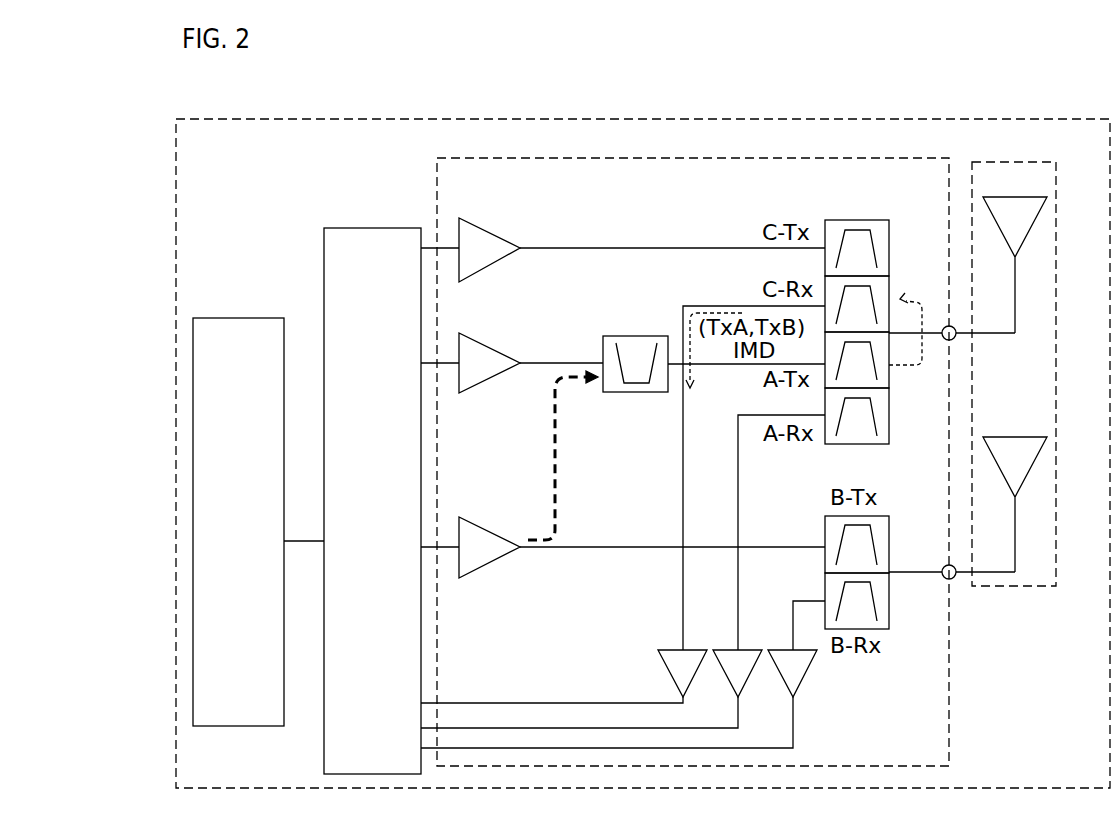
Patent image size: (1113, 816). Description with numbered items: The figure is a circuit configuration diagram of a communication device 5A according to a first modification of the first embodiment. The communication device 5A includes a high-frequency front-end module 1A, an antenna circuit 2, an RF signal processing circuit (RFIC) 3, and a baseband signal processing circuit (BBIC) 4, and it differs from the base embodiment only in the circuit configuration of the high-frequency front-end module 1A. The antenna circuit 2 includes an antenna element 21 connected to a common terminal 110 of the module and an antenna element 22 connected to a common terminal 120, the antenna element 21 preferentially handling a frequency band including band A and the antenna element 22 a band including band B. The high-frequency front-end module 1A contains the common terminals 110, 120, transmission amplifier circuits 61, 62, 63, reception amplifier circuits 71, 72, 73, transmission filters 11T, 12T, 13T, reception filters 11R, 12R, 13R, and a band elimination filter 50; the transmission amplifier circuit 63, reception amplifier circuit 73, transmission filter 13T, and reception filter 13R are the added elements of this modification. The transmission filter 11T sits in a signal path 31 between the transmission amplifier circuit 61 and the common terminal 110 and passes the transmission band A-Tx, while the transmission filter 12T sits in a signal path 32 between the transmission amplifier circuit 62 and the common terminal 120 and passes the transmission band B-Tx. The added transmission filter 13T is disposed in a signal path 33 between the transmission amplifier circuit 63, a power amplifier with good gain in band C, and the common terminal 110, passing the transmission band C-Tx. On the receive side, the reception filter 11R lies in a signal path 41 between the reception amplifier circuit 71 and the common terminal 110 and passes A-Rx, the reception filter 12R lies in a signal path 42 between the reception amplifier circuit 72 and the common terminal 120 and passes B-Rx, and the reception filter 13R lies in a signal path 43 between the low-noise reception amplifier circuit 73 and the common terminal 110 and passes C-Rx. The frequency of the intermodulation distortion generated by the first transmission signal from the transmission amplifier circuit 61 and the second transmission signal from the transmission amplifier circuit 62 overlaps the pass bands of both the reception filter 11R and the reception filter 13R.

The communication device 5A is at (290, 119).
The high-frequency front-end module 1A is at (858, 158).
The antenna circuit 2 is at (1056, 238).
The RF signal processing circuit (RFIC) 3 is at (358, 228).
The baseband signal processing circuit (BBIC) 4 is at (238, 318).
The antenna element 21 is at (998, 197).
The antenna element 22 is at (998, 437).
The common terminal 110 is at (955, 338).
The common terminal 120 is at (953, 578).
The transmission filter 13T is at (889, 240).
The reception filter 13R is at (889, 296).
The transmission filter 11T is at (889, 380).
The reception filter 11R is at (889, 422).
The transmission filter 12T is at (889, 536).
The reception filter 12R is at (889, 612).
The transmission amplifier circuit 63 is at (480, 226).
The transmission amplifier circuit 61 is at (480, 341).
The transmission amplifier circuit 62 is at (482, 523).
The band elimination filter 50 is at (620, 336).
The signal path 33 is at (634, 248).
The signal path 31 is at (724, 365).
The signal path 32 is at (620, 546).
The signal path 41 is at (738, 598).
The signal path 42 is at (800, 602).
The signal path 43 is at (683, 594).
The reception amplifier circuit 71 is at (730, 650).
The reception amplifier circuit 72 is at (786, 650).
The reception amplifier circuit 73 is at (666, 650).